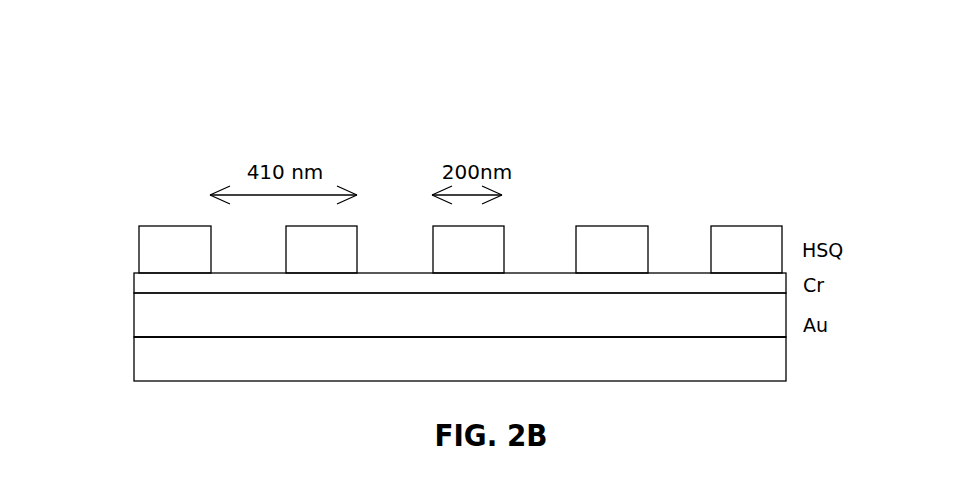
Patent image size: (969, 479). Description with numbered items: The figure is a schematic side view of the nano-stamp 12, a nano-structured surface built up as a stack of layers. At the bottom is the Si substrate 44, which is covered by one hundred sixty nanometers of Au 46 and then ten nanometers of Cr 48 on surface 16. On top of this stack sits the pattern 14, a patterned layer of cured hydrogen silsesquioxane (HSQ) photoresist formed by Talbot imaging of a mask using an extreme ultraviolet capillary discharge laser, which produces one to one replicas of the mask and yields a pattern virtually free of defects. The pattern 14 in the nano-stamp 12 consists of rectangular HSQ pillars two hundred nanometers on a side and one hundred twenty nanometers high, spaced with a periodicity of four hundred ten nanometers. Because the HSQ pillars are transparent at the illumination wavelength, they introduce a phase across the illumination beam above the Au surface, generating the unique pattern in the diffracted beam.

The nano-stamp 12 is at (630, 110).
The pattern 14 is at (747, 226).
The surface 16 is at (529, 337).
The Si substrate 44 is at (495, 368).
The Au layer 46 is at (493, 326).
The Cr layer 48 is at (132, 286).